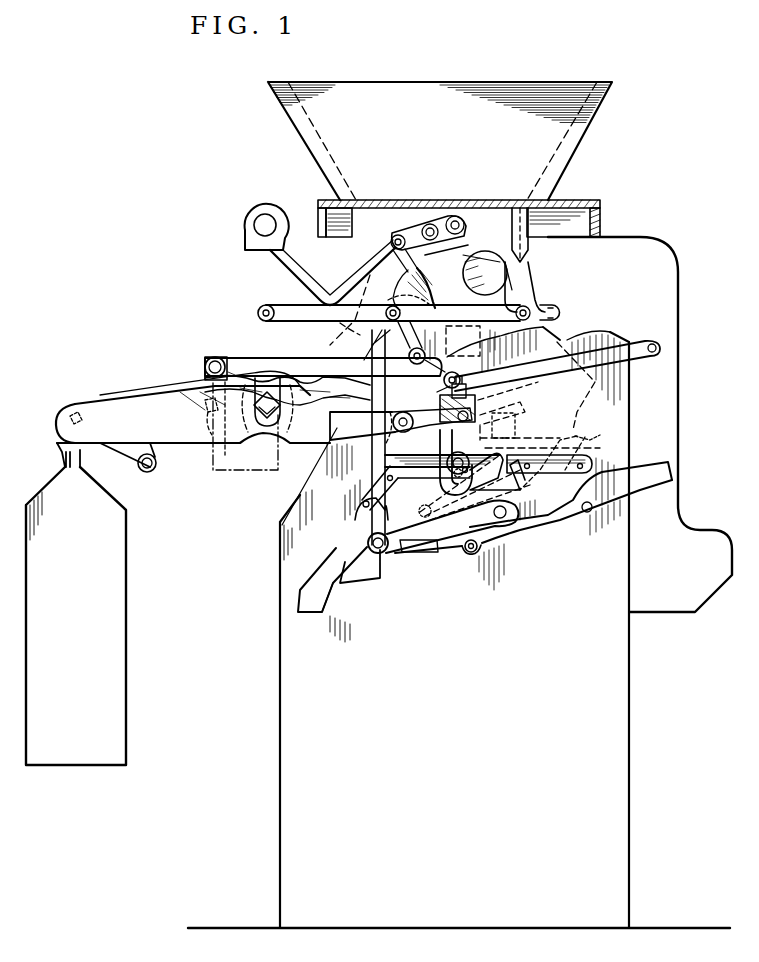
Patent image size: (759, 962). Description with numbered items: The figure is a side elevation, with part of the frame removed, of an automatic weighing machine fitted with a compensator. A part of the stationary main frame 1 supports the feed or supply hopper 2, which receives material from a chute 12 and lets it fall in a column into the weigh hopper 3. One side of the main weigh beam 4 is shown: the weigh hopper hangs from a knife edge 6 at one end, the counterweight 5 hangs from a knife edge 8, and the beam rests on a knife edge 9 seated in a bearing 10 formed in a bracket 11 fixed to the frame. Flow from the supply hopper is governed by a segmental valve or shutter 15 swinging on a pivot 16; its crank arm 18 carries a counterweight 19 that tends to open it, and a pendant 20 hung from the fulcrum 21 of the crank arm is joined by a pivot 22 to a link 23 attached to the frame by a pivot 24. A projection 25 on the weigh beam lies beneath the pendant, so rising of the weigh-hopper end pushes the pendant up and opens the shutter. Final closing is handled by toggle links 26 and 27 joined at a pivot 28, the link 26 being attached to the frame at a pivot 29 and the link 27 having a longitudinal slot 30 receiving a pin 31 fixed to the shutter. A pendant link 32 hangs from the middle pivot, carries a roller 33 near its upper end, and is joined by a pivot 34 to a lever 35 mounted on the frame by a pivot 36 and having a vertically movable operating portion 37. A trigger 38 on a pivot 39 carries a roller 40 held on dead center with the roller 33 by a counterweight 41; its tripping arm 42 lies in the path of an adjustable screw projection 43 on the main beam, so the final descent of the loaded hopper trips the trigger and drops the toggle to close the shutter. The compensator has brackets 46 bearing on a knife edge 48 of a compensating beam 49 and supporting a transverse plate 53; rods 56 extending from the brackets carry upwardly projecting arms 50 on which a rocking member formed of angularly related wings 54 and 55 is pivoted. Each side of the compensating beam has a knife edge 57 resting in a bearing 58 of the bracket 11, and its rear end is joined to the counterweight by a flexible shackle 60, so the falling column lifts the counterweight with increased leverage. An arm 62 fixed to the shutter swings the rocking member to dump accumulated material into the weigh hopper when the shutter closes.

The main frame 1 is at (678, 410).
The feed or supply hopper 2 is at (376, 212).
The weigh hopper 3 is at (282, 732).
The main weigh beam 4 is at (193, 443).
The counterweight 5 is at (126, 650).
The knife edge 6 is at (442, 440).
The knife edge 8 is at (78, 412).
The knife edge 9 is at (254, 405).
The bearing 10 is at (284, 412).
The bracket 11 is at (256, 470).
The chute 12 is at (295, 126).
The valve or shutter 15 is at (380, 325).
The pivot 16 is at (458, 225).
The crank arm 18 is at (318, 297).
The counterweight 19 is at (244, 225).
The pendant 20 is at (428, 300).
The fulcrum 21 is at (400, 235).
The pivot 22 is at (457, 380).
The link 23 is at (554, 365).
The pivot 24 is at (660, 345).
The projection 25 is at (428, 426).
The link 26 is at (304, 322).
The link 27 is at (508, 310).
The pivot 28 is at (372, 319).
The pivot 29 is at (259, 310).
The longitudinal slot 30 is at (556, 313).
The pin 31 is at (546, 308).
The pendant link 32 is at (375, 518).
The roller 33 is at (360, 364).
The pivot 34 is at (392, 560).
The lever 35 is at (516, 528).
The pivot 36 is at (472, 554).
The operating portion 37 is at (672, 470).
The trigger 38 is at (372, 424).
The pivot 39 is at (383, 437).
The roller 40 is at (417, 349).
The counterweight 41 is at (321, 476).
The tripping arm 42 is at (476, 408).
The projection 43 is at (468, 398).
The brackets 46 is at (578, 434).
The knife edge 48 is at (515, 403).
The compensating beam 49 is at (258, 358).
The arms 50 is at (475, 486).
The plate 53 is at (592, 451).
The wing 54 is at (432, 485).
The wing 55 is at (540, 430).
The rods 56 is at (421, 511).
The knife edge 57 is at (205, 404).
The bearing 58 is at (206, 418).
The flexible shackle 60 is at (82, 450).
The arm 62 is at (460, 343).